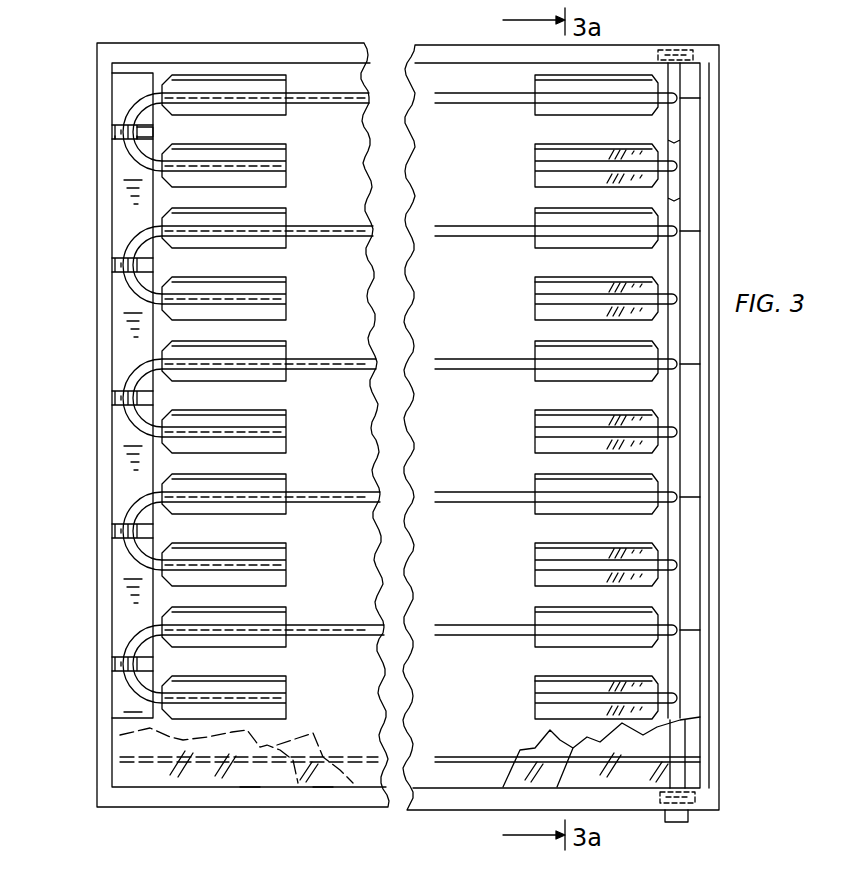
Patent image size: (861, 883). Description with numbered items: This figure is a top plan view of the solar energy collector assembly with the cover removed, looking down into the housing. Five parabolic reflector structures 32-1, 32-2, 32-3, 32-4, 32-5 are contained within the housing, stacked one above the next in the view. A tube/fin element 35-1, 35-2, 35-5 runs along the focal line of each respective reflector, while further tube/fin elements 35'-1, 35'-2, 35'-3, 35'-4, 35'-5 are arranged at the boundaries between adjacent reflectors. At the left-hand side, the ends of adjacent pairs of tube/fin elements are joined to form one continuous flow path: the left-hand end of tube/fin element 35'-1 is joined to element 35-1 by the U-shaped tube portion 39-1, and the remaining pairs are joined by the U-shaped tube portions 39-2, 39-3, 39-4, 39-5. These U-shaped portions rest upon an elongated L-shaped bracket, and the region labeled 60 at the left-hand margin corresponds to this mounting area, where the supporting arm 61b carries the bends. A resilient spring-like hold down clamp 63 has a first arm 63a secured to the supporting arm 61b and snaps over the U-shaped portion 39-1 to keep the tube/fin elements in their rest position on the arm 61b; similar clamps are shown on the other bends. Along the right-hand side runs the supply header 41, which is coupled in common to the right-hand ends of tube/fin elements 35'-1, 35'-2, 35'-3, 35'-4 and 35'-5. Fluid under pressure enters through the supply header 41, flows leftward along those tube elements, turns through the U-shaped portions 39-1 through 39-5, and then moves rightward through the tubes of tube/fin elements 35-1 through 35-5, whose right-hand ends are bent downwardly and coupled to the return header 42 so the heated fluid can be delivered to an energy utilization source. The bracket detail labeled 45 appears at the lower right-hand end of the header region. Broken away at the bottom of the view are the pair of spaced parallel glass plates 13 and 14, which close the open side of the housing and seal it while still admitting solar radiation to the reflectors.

The header block 60 is at (128, 75).
The U-shaped tube portion 39-1 is at (128, 118).
The U-shaped tube portion 39-2 is at (128, 251).
The U-shaped tube portion 39-3 is at (128, 383).
The U-shaped tube portion 39-4 is at (128, 517).
The U-shaped tube portion 39-5 is at (128, 648).
The resilient spring-like hold down clamp 63 is at (150, 663).
The first arm 63a is at (112, 140).
The supporting arm 61b is at (150, 131).
The tube/fin element 35'-1 is at (431, 89).
The tube/fin element 35-1 is at (546, 150).
The tube/fin element 35'-2 is at (567, 220).
The tube/fin element 35-2 is at (547, 290).
The tube/fin element 35'-3 is at (567, 354).
The tube/fin element 35'-4 is at (567, 485).
The tube/fin element 35'-5 is at (567, 615).
The tube/fin element 35-5 is at (545, 712).
The parabolic reflector structure 32-1 is at (506, 177).
The parabolic reflector structure 32-2 is at (506, 319).
The parabolic reflector structure 32-3 is at (504, 434).
The parabolic reflector structure 32-4 is at (503, 567).
The parabolic reflector structure 32-5 is at (506, 696).
The supply header 41 is at (682, 207).
The return header 42 is at (682, 163).
The bottom bracket 45 is at (688, 818).
The glass plate 13 is at (250, 782).
The glass plate 14 is at (323, 785).